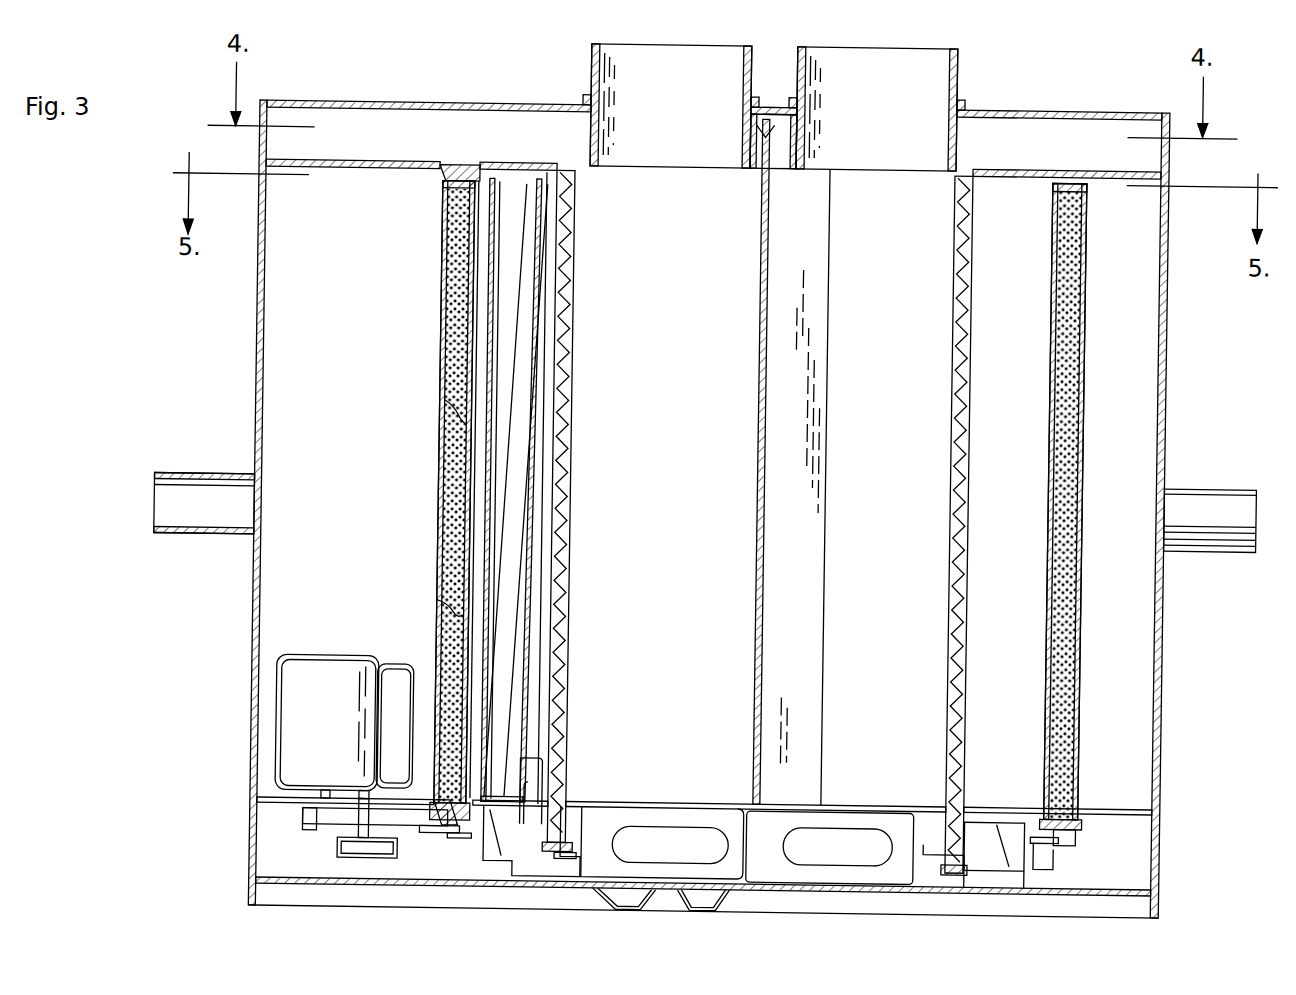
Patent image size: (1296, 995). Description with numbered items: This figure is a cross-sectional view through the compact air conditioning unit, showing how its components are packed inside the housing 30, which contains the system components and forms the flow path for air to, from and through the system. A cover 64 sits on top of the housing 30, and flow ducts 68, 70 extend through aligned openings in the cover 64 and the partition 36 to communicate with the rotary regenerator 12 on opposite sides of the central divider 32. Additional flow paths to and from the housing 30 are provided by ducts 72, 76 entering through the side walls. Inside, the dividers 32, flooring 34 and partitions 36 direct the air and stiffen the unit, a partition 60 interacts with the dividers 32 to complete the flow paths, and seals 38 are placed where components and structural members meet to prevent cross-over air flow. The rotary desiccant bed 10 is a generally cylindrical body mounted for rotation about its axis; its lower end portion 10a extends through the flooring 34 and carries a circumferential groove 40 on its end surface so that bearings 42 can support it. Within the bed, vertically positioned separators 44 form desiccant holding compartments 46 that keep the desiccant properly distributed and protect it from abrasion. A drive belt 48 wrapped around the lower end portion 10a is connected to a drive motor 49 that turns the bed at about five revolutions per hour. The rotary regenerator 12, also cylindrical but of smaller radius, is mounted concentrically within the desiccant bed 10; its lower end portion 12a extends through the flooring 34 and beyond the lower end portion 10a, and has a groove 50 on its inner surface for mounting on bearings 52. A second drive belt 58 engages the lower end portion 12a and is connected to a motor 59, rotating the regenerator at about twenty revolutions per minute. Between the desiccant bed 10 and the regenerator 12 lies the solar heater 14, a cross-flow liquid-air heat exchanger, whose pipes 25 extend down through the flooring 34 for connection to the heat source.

The rotary desiccant bed 10 is at (449, 296).
The lower end portion of the rotary desiccant bed 10a is at (1084, 808).
The rotary regenerator 12 is at (581, 343).
The lower end portion of the rotary regenerator 12a is at (976, 853).
The solar heater 14 is at (516, 186).
The pipes 25 is at (538, 778).
The housing 30 is at (262, 372).
The dividers 32 is at (769, 641).
The flooring 34 is at (832, 797).
The partitions 36 is at (359, 166).
The seals 38 is at (463, 162).
The circumferential groove 40 is at (451, 830).
The bearings 42 is at (470, 835).
The separators 44 is at (472, 545).
The desiccant holding compartments 46 is at (459, 370).
The drive belt 48 is at (411, 823).
The drive motor 49 is at (333, 654).
The groove 50 is at (579, 851).
The bearings 52 is at (598, 836).
The drive belt 58 is at (348, 847).
The motor 59 is at (408, 662).
The partition 60 is at (763, 105).
The cover 64 is at (433, 102).
The flow duct 68 is at (596, 76).
The flow duct 70 is at (959, 64).
The duct 72 is at (1242, 539).
The duct 76 is at (216, 535).